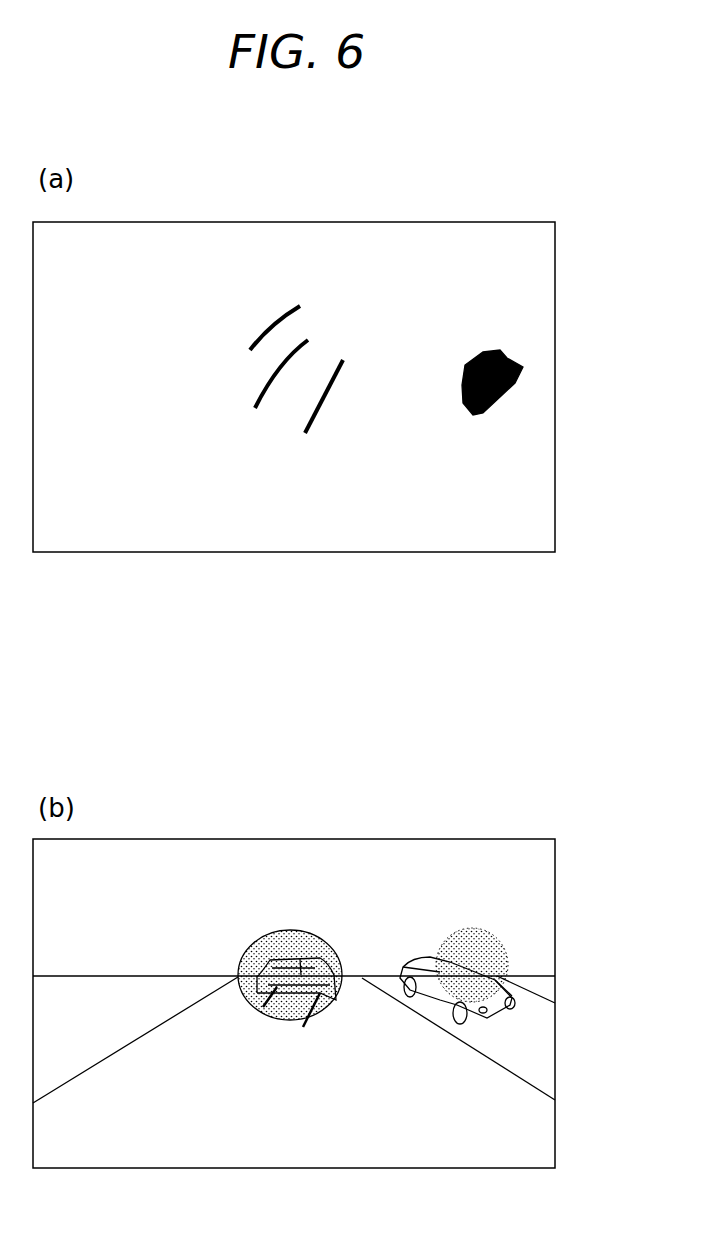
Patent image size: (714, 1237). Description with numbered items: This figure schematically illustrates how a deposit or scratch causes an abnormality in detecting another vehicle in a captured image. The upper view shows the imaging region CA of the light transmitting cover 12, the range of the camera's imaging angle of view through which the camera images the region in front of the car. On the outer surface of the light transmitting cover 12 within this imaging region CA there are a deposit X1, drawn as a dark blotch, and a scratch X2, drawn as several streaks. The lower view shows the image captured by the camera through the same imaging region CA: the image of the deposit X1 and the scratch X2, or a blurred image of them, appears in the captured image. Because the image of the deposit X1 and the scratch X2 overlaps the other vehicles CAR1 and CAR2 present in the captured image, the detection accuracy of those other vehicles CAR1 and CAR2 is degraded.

The light transmitting cover 12 is at (540, 337).
The imaging region CA is at (265, 222).
The deposit X1 is at (480, 418).
The scratch X2 is at (282, 427).
The other vehicle CAR1 is at (422, 954).
The other vehicle CAR2 is at (238, 977).